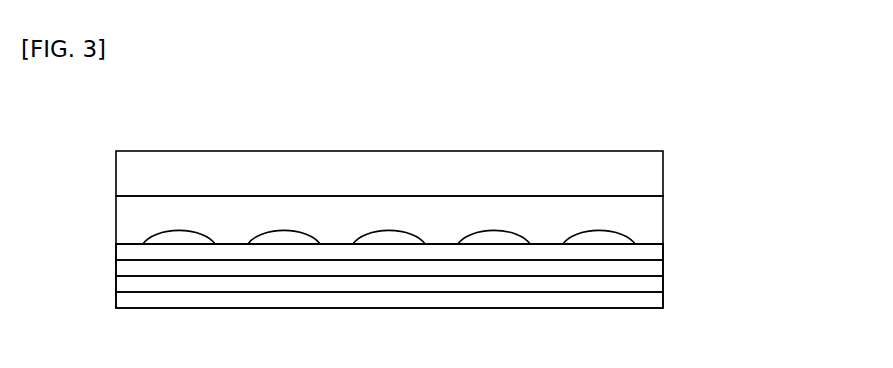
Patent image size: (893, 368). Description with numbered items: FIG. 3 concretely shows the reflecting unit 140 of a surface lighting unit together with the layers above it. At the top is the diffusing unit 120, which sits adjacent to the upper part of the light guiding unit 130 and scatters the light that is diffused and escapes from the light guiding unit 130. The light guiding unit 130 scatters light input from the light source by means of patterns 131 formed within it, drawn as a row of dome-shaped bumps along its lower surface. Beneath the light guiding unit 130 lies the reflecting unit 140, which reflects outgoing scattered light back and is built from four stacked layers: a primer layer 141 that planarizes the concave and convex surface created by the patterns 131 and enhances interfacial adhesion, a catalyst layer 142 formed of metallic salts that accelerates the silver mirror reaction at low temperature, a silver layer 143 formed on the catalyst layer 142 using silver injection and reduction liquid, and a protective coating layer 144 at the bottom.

The diffusing unit 120 is at (650, 176).
The light guiding unit 130 is at (650, 226).
The patterns 131 is at (175, 233).
The reflecting unit 140 is at (782, 234).
The primer layer 141 is at (653, 254).
The catalyst layer 142 is at (653, 275).
The silver layer 143 is at (655, 291).
The protective coating layer 144 is at (655, 300).